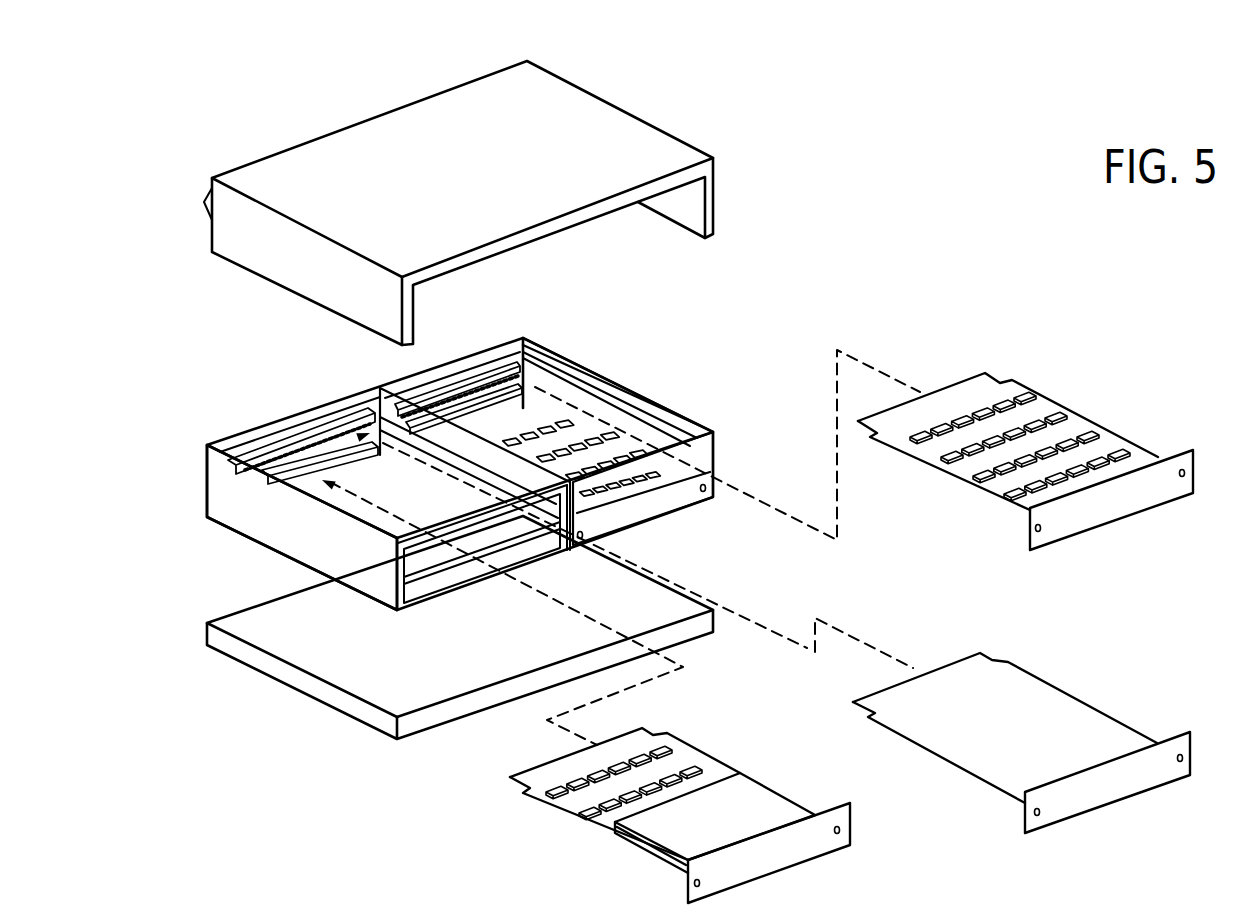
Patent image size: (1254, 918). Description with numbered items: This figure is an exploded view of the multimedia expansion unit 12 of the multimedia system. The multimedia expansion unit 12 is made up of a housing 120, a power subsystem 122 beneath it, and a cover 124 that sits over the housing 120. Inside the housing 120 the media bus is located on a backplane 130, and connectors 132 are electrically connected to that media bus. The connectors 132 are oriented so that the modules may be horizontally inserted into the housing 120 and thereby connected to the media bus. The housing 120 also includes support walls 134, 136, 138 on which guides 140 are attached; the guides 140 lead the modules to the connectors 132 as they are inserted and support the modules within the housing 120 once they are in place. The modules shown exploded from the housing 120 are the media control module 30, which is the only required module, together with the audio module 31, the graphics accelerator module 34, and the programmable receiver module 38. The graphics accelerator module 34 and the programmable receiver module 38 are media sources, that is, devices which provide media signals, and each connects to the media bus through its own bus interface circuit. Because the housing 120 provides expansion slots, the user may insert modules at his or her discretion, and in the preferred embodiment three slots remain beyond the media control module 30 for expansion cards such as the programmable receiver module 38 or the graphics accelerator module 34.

The multimedia expansion unit 12 is at (252, 138).
The cover 124 is at (647, 123).
The housing 120 is at (207, 463).
The support wall 134 is at (263, 508).
The backplane 130 is at (290, 427).
The connectors 132 is at (338, 423).
The support wall 136 is at (428, 362).
The support wall 138 is at (603, 373).
The guides 140 is at (640, 410).
The power subsystem 122 is at (328, 697).
The media control module 30 is at (690, 500).
The audio module 31 is at (1047, 402).
The graphics accelerator module 34 is at (1090, 703).
The programmable receiver module 38 is at (712, 760).